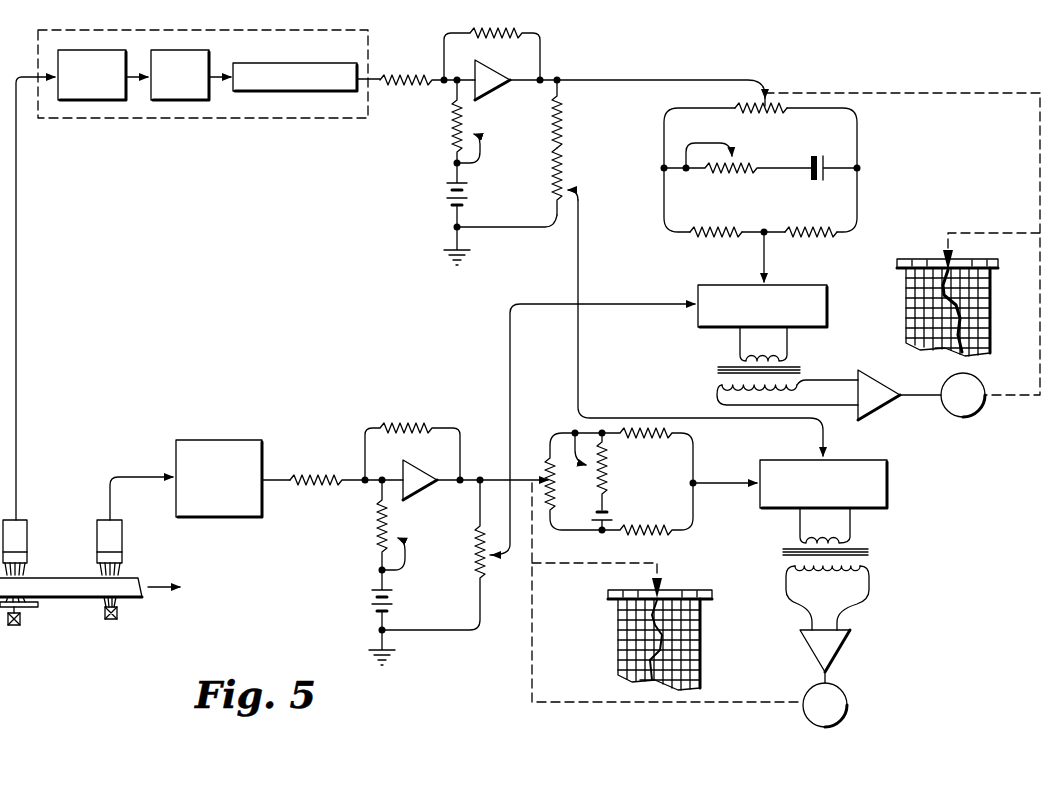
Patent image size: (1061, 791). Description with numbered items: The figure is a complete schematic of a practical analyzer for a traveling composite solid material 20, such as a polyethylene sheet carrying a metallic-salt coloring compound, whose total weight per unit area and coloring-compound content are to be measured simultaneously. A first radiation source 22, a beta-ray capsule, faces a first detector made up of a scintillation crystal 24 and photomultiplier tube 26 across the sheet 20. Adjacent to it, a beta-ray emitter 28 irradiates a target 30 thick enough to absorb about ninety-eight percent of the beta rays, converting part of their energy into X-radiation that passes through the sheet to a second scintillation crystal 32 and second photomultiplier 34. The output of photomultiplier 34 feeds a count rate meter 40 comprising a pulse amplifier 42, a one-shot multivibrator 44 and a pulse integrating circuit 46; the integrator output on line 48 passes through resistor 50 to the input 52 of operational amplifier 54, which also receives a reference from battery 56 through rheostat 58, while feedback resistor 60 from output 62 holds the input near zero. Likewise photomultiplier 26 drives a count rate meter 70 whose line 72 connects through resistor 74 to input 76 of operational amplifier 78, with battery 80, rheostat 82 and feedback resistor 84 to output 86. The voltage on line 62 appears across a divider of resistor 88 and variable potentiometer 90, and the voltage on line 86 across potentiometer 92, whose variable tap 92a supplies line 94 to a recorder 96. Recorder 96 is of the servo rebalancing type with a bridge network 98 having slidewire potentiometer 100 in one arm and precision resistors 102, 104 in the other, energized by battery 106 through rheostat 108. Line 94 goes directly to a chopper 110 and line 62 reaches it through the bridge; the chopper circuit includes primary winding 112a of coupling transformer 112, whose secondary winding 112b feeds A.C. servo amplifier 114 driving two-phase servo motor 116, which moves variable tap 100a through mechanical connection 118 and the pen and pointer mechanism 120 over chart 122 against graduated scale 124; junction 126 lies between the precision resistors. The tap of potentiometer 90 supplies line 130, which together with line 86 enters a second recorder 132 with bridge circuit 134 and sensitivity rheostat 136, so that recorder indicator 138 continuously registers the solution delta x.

The solid material 20 is at (142, 578).
The first radiation source 22 is at (118, 622).
The scintillation crystal 24 is at (124, 560).
The photomultiplier tube 26 is at (122, 528).
The beta-ray emitter 28 is at (25, 628).
The target 30 is at (40, 605).
The second scintillation crystal 32 is at (30, 560).
The second photomultiplier 34 is at (30, 528).
The count rate meter 40 is at (235, 118).
The pulse amplifier 42 is at (106, 50).
The one-shot multivibrator 44 is at (200, 50).
The pulse integrating circuit 46 is at (300, 63).
The line 48 is at (372, 82).
The resistor 50 is at (412, 78).
The input 52 is at (447, 85).
The operational amplifier 54 is at (496, 97).
The battery 56 is at (445, 200).
The rheostat 58 is at (452, 132).
The feedback resistor 60 is at (520, 31).
The output 62 is at (578, 78).
The count rate meter 70 is at (240, 440).
The line 72 is at (278, 478).
The resistor 74 is at (310, 486).
The input 76 is at (375, 487).
The operational amplifier 78 is at (428, 493).
The battery 80 is at (372, 611).
The rheostat 82 is at (378, 522).
The feedback resistor 84 is at (405, 426).
The output 86 is at (471, 478).
The resistor 88 is at (570, 120).
The variable potentiometer 90 is at (570, 180).
The potentiometer 92 is at (478, 556).
The variable tap 92a is at (498, 566).
The line 94 is at (505, 318).
The recorder 96 is at (856, 306).
The bridge network 98 is at (752, 206).
The slidewire potentiometer 100 is at (772, 113).
The variable tap 100a is at (770, 92).
The precision resistor 102 is at (712, 240).
The precision resistor 104 is at (812, 240).
The battery 106 is at (820, 182).
The rheostat 108 is at (720, 178).
The chopper 110 is at (696, 291).
The coupling transformer 112 is at (763, 366).
The primary winding 112a is at (738, 351).
The secondary winding 112b is at (720, 388).
The A.C. servo amplifier 114 is at (880, 411).
The two-phase servo motor 116 is at (982, 413).
The mechanical connection 118 is at (1038, 160).
The pen and pointer mechanism 120 is at (955, 262).
The chart 122 is at (990, 326).
The graduated scale 124 is at (920, 258).
The junction 126 is at (770, 228).
The line 130 is at (582, 348).
The recorder 132 is at (716, 573).
The bridge circuit 134 is at (630, 499).
The sensitivity rheostat 136 is at (620, 473).
The recorder indicator 138 is at (645, 587).